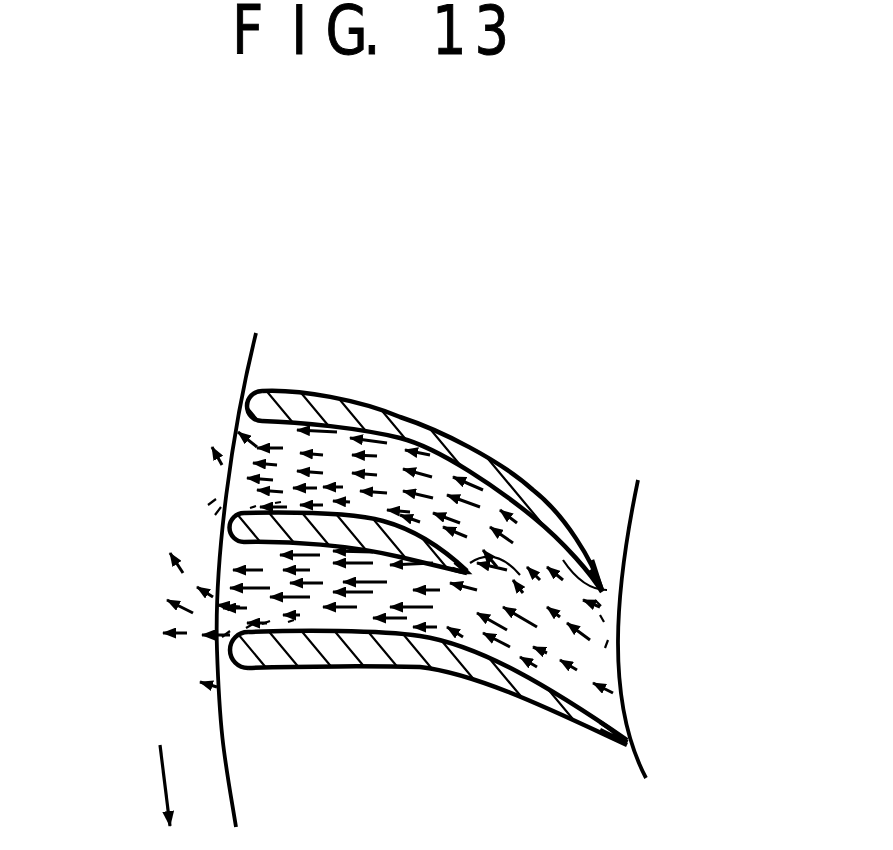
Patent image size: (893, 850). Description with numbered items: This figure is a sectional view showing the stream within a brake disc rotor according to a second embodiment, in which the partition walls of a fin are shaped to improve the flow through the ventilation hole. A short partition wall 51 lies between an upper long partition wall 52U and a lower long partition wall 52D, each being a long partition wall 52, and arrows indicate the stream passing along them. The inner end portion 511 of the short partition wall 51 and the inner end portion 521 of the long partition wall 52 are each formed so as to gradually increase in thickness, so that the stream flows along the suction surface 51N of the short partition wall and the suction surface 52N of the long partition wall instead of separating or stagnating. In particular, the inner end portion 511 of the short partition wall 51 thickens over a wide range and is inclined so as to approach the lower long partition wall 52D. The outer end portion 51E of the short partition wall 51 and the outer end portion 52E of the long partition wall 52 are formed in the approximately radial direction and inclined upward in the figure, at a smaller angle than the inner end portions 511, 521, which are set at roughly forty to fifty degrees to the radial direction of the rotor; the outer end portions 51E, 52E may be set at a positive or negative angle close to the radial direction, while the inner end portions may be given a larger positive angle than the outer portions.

The short partition wall 51 is at (446, 546).
The suction surface of short partition wall 51N is at (364, 512).
The outer end portion of short partition wall 51E is at (232, 540).
The inner end portion of short partition wall 511 is at (575, 653).
The long partition wall 52 is at (446, 523).
The upper long partition wall 52U is at (458, 442).
The suction surface of long partition wall 52N is at (528, 485).
The lower long partition wall 52D is at (463, 662).
The outer end portion of long partition wall 52E is at (258, 400).
The inner end portion of long partition wall 521 is at (600, 590).